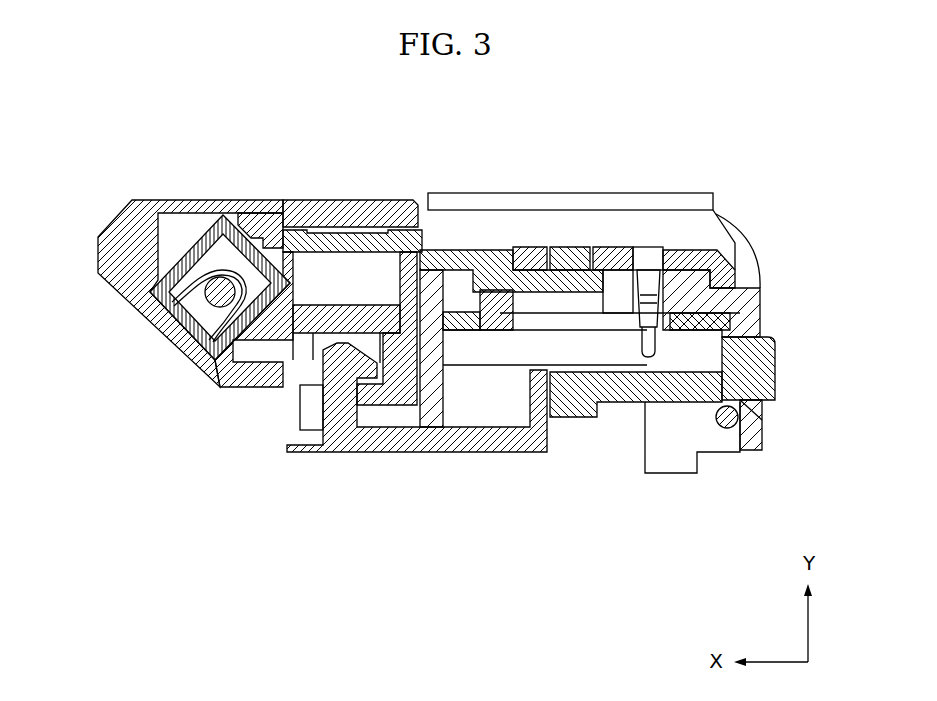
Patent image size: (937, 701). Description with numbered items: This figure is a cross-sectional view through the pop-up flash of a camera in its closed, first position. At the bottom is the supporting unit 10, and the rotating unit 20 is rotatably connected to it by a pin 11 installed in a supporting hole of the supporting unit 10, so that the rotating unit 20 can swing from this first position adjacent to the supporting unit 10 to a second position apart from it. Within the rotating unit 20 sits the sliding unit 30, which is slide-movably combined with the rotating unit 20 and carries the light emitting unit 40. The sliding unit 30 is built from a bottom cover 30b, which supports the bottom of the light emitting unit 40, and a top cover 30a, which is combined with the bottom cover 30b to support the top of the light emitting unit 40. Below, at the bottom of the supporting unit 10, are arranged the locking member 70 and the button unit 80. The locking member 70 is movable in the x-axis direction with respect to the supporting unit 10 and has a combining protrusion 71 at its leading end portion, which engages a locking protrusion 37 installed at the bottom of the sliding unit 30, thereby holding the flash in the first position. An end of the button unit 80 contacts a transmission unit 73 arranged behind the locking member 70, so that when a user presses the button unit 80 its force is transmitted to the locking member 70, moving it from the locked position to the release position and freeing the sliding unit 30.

The supporting unit 10 is at (672, 484).
The pin 11 is at (727, 429).
The rotating unit 20 is at (748, 225).
The sliding unit 30 is at (186, 316).
The top cover 30a is at (150, 290).
The bottom cover 30b is at (226, 337).
The locking protrusion 37 is at (360, 384).
The light emitting unit 40 is at (242, 243).
The locking member 70 is at (510, 464).
The combining protrusion 71 is at (312, 357).
The transmission unit 73 is at (563, 415).
The button unit 80 is at (779, 410).